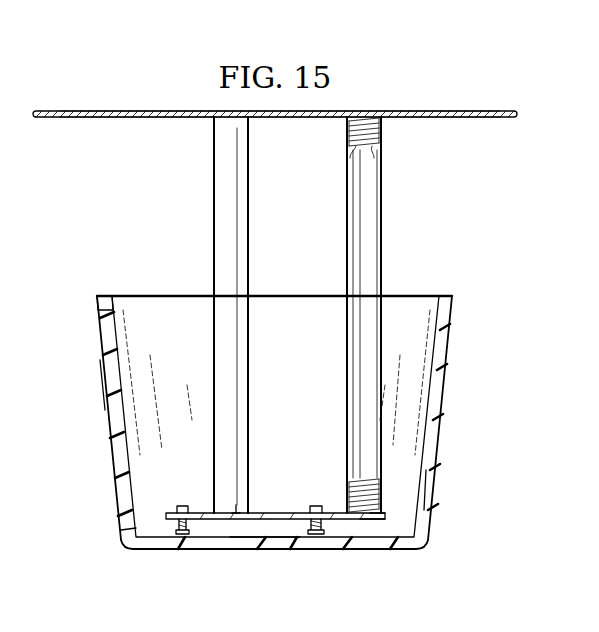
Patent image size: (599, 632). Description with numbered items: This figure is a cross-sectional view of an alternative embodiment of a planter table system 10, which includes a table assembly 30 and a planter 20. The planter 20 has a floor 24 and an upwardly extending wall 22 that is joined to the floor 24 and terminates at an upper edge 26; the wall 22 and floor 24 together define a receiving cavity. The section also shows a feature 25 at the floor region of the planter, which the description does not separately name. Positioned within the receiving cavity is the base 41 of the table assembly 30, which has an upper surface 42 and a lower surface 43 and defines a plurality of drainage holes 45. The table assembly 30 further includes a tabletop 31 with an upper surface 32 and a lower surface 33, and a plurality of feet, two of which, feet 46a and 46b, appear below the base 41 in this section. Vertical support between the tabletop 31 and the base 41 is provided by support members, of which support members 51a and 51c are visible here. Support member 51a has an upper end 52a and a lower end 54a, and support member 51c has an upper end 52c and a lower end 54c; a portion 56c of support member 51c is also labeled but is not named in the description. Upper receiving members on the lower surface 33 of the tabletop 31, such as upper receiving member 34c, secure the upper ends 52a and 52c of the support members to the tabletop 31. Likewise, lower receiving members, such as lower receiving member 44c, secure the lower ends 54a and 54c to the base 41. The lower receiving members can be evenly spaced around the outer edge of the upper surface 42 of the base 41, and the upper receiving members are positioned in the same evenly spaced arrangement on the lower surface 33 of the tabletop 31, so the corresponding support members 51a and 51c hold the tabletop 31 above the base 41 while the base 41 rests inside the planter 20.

The planter table system 10 is at (410, 55).
The planter 20 is at (454, 348).
The wall 22 is at (106, 403).
The floor 24 is at (132, 516).
The bottom 25 is at (262, 550).
The upper edge 26 is at (104, 294).
The table assembly 30 is at (488, 205).
The tabletop 31 is at (474, 108).
The upper surface 32 is at (120, 110).
The lower surface 33 is at (85, 119).
The upper receiving member 34c is at (356, 150).
The base 41 is at (396, 514).
The upper surface 42 is at (300, 512).
The lower surface 43 is at (372, 522).
The lower receiving member 44c is at (358, 484).
The drainage hole 45 is at (238, 521).
The foot 46a is at (316, 536).
The foot 46b is at (182, 536).
The support member 51a is at (208, 256).
The support member 51c is at (386, 272).
The upper end 52a is at (212, 130).
The upper end 52c is at (383, 128).
The lower end 54a is at (212, 493).
The lower end 54c is at (424, 462).
The post body 56c is at (383, 200).